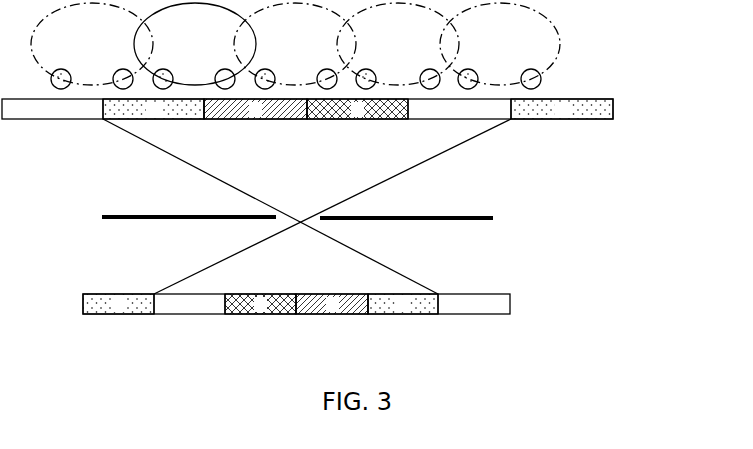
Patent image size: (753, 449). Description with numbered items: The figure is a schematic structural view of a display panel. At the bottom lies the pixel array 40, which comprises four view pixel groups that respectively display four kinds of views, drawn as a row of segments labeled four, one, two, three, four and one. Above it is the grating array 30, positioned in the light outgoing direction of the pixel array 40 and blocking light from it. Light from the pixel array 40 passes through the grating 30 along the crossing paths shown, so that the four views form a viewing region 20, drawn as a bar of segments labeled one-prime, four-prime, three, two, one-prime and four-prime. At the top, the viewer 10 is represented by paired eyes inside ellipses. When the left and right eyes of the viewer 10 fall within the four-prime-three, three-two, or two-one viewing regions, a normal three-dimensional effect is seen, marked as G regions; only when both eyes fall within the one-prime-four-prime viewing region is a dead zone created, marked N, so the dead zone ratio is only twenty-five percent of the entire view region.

The viewer 10 is at (560, 41).
The viewing region 20 is at (613, 108).
The grating array 30 is at (493, 218).
The pixel array 40 is at (510, 304).